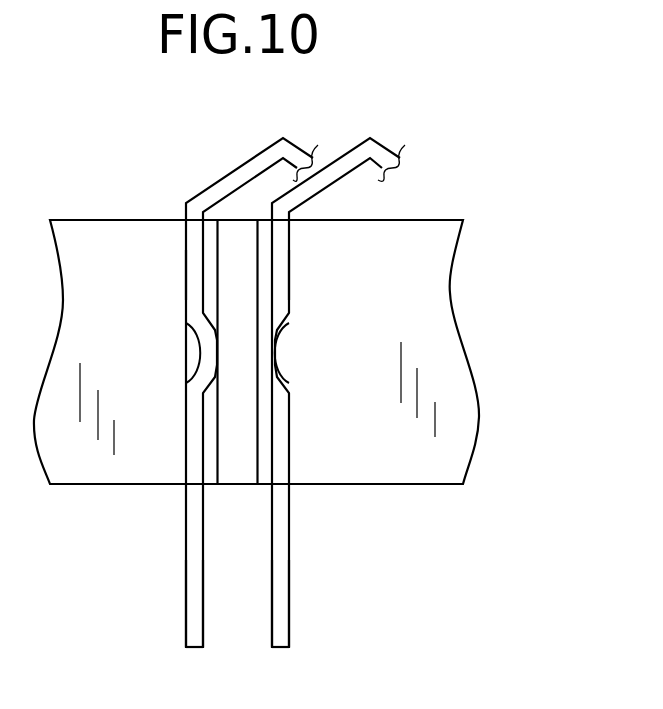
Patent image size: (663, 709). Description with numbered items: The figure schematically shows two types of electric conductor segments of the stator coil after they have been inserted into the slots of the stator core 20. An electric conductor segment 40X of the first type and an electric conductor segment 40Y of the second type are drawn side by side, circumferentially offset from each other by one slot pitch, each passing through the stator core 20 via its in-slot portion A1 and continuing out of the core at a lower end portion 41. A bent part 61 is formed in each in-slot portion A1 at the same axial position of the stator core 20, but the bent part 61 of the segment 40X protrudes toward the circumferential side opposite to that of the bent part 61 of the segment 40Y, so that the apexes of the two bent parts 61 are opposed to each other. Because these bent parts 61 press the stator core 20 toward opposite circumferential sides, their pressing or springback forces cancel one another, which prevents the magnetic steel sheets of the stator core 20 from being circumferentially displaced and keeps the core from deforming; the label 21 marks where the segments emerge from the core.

The stator core 20 is at (442, 233).
The through hole 21 is at (187, 471).
The electric conductor segment of the second type 40Y is at (255, 153).
The electric conductor segment of the first type 40X is at (342, 153).
The bent part 61 is at (186, 366).
The pin tip / lower portion 41 is at (186, 600).
The in-slot portion A1 is at (186, 280).